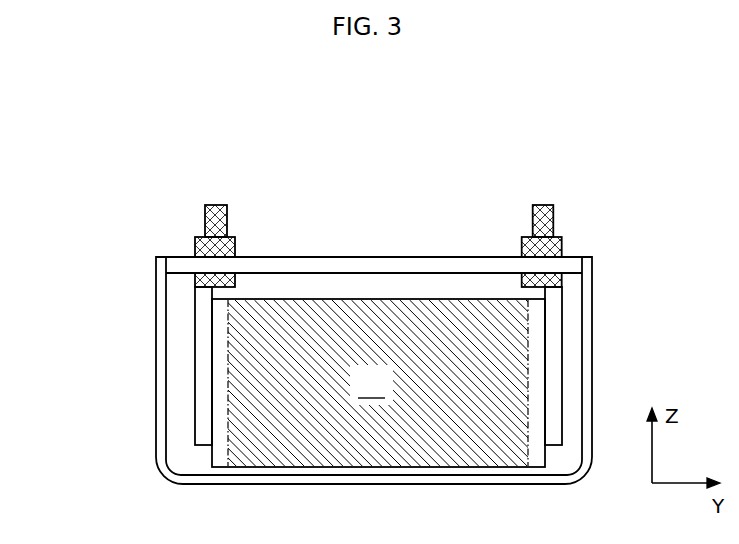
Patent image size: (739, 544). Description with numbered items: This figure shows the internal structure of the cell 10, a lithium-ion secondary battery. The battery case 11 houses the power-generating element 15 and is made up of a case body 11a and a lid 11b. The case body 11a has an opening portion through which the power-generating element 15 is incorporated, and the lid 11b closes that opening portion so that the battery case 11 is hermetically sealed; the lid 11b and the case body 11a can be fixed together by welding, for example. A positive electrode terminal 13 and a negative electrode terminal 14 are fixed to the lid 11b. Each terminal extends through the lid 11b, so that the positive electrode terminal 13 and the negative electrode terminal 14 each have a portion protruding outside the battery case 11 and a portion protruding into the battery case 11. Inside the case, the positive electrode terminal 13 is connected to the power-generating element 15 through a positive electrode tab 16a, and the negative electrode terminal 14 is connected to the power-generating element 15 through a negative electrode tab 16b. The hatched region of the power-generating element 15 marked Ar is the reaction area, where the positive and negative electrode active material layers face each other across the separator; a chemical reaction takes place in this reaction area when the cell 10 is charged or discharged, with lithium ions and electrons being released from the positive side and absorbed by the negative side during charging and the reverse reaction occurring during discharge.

The cell 10 is at (609, 240).
The battery case 11 is at (307, 341).
The case body 11a is at (160, 402).
The lid 11b is at (377, 268).
The positive electrode terminal 13 is at (541, 212).
The negative electrode terminal 14 is at (212, 210).
The power-generating element 15 is at (303, 299).
The positive electrode tab 16a is at (552, 348).
The negative electrode tab 16b is at (205, 343).